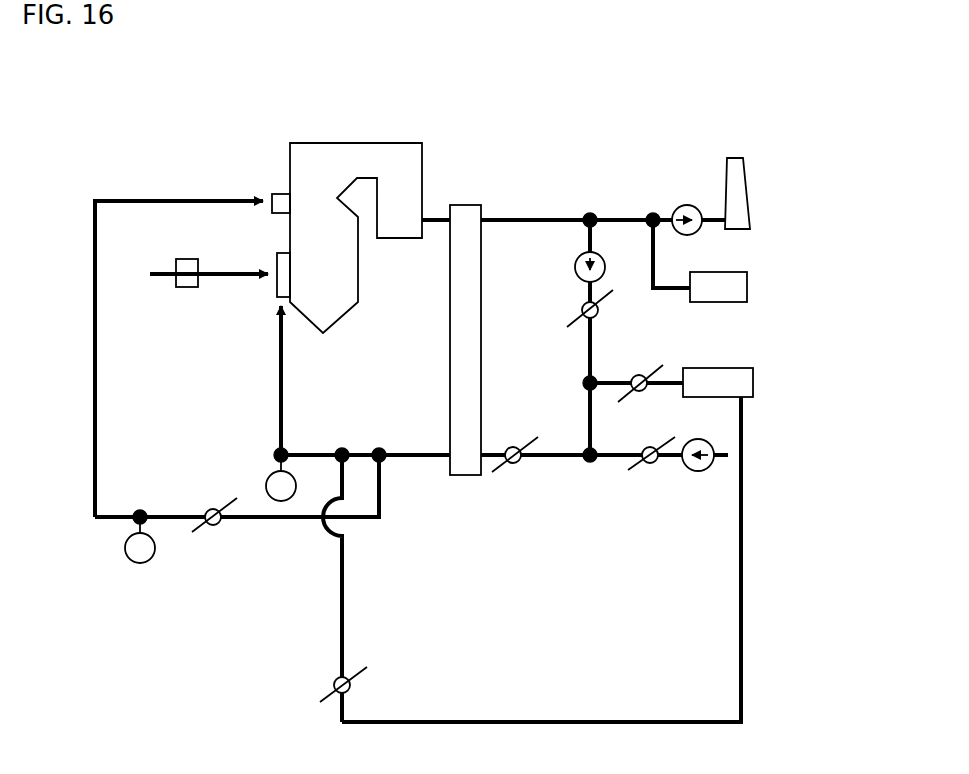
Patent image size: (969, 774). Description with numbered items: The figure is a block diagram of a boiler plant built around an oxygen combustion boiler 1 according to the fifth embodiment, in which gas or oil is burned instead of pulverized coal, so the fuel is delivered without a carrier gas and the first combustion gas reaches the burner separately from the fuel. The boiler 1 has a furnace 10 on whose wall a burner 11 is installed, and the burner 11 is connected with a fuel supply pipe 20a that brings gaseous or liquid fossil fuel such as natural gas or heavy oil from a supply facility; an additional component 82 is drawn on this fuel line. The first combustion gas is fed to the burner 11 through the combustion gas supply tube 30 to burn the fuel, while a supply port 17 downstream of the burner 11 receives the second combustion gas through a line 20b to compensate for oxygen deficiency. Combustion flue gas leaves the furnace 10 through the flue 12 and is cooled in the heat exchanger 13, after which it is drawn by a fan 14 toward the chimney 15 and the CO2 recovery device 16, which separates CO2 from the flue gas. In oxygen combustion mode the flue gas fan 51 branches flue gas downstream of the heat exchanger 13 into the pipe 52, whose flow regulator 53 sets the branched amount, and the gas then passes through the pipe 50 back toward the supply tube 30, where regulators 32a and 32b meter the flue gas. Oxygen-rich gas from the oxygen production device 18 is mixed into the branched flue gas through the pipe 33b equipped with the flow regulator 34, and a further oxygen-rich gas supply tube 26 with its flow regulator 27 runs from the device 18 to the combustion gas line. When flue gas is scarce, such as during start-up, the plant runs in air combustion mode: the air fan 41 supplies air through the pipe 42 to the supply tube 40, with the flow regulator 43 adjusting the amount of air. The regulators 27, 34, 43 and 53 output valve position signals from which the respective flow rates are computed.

The oxygen combustion boiler 1 is at (343, 128).
The furnace 10 is at (300, 170).
The burner 11 is at (278, 258).
The flue 12 is at (432, 218).
The heat exchanger 13 is at (470, 205).
The induced draft fan 14 is at (686, 206).
The chimney 15 is at (735, 198).
The CO2 recovery device 16 is at (728, 270).
The supply port 17 is at (272, 195).
The oxygen production device 18 is at (730, 366).
The fuel supply pipe 20a is at (238, 282).
The air supply line 20b is at (96, 440).
The oxygen-rich gas supply tube 26 is at (342, 625).
The flow regulator 27 is at (334, 682).
The combustion gas supply tube 30 is at (413, 452).
The valve 32a is at (518, 465).
The valve 32b is at (216, 527).
The pipe 33b is at (613, 372).
The flow regulator 34 is at (640, 376).
The supply tube 40 is at (614, 465).
The air fan 41 is at (700, 472).
The pipe 42 is at (671, 462).
The flow regulator 43 is at (650, 466).
The pipe 50 is at (585, 345).
The flue gas fan 51 is at (605, 268).
The pipe 52 is at (586, 232).
The flow regulator 53 is at (600, 311).
The fuel feeder 82 is at (186, 288).